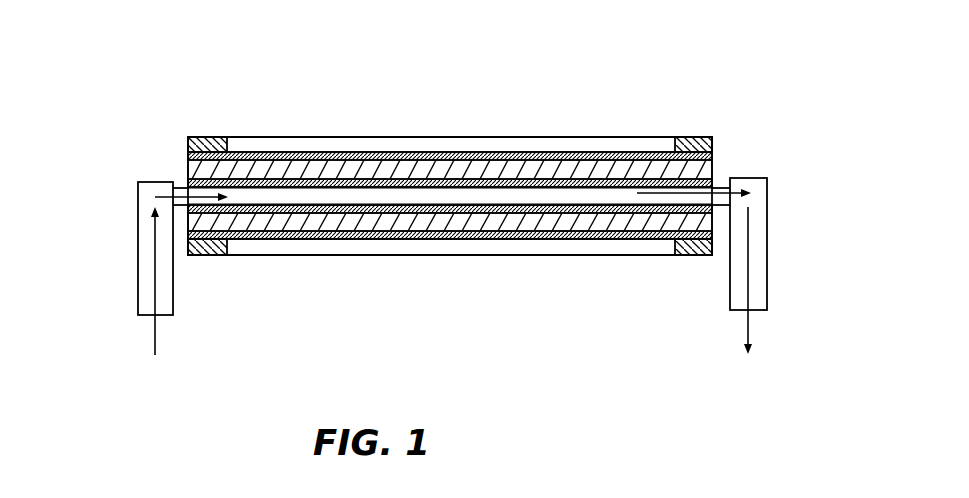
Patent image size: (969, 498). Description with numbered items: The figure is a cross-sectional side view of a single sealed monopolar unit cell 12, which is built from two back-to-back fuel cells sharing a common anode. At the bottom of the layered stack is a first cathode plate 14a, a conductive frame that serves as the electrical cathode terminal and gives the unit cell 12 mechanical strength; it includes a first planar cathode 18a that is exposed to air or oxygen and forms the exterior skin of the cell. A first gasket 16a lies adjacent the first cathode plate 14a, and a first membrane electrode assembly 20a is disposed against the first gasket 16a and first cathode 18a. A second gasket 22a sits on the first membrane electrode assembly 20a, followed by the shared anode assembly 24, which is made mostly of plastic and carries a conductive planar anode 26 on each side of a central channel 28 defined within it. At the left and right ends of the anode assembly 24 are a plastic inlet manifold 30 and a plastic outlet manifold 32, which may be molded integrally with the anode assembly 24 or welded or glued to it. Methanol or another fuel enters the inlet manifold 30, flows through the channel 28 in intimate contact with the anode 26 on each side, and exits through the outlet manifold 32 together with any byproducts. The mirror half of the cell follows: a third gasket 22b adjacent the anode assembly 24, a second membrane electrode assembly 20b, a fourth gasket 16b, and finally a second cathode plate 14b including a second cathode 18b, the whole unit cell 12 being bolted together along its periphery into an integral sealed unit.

The unit cell 12 is at (168, 114).
The first cathode plate 14a is at (213, 143).
The second cathode plate 14b is at (680, 246).
The first gasket 16a is at (713, 154).
The fourth gasket 16b is at (664, 240).
The first planar cathode 18a is at (285, 146).
The second cathode 18b is at (322, 241).
The first membrane electrode assembly 20a is at (713, 168).
The second membrane electrode assembly 20b is at (713, 225).
The second gasket 22a is at (716, 179).
The third gasket 22b is at (713, 206).
The anode assembly 24 is at (260, 188).
The anode 26 is at (422, 191).
The channel 28 is at (493, 193).
The inlet manifold 30 is at (138, 212).
The outlet manifold 32 is at (767, 293).